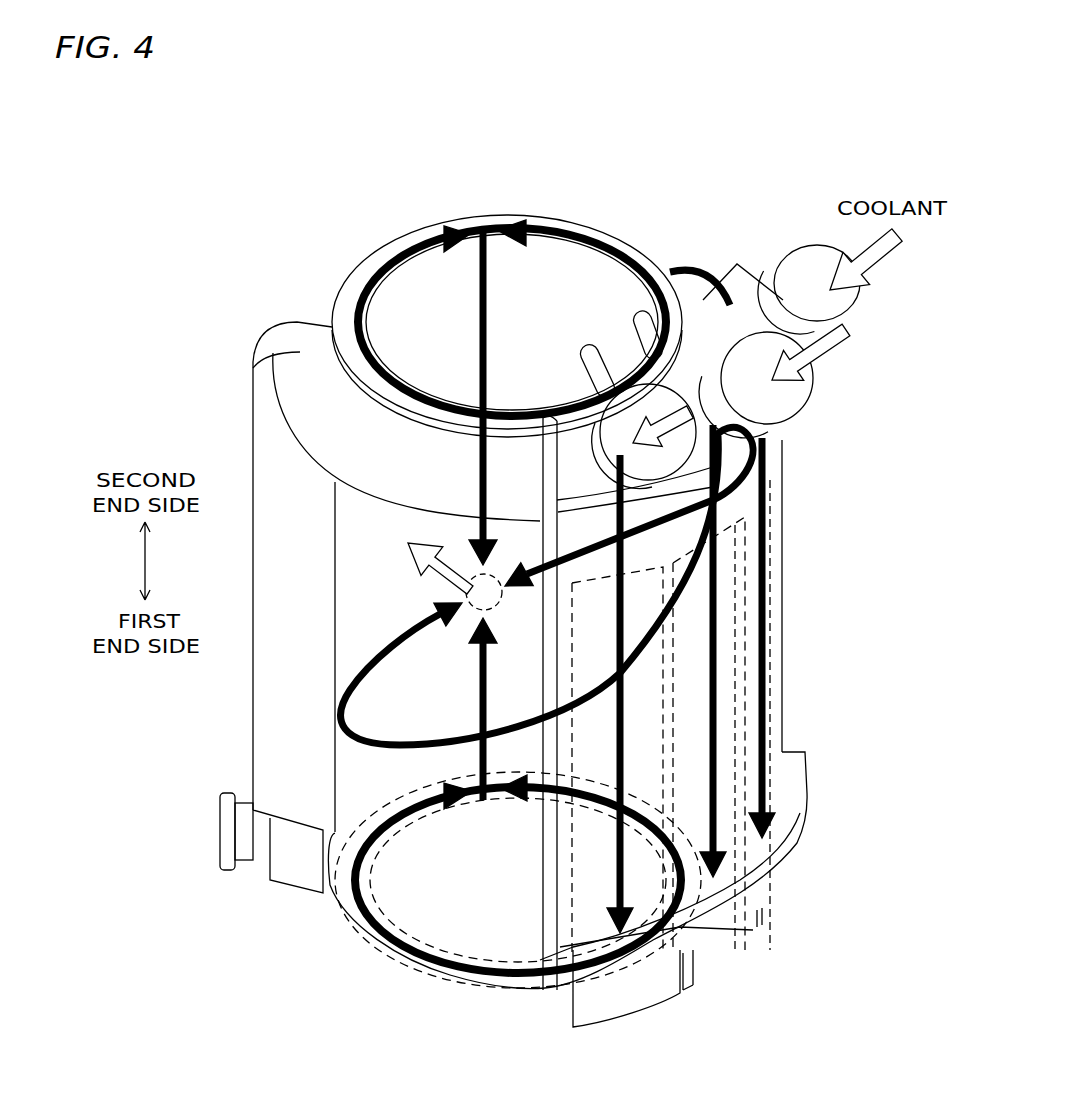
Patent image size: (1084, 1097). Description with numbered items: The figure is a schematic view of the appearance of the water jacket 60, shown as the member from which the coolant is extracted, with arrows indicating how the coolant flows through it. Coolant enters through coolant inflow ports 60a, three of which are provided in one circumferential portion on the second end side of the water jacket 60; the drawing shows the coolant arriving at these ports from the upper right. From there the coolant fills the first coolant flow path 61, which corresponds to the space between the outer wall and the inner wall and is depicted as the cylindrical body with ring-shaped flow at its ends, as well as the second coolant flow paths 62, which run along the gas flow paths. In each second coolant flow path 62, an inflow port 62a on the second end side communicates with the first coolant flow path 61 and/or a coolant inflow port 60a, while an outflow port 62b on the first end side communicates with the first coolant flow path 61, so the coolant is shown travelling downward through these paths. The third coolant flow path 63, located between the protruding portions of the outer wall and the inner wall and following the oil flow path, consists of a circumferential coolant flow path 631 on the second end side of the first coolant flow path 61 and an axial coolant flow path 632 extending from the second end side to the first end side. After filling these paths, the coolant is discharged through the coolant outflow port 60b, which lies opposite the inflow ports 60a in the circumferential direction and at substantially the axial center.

The water jacket 60 is at (789, 162).
The coolant inflow port 60a is at (823, 293).
The coolant outflow port 60b is at (460, 594).
The first coolant flow path 61 is at (393, 950).
The second coolant flow path 62 is at (767, 660).
The inflow port 62a is at (770, 482).
The outflow port 62b is at (753, 815).
The third coolant flow path 63 is at (158, 325).
The circumferential coolant flow path 631 is at (327, 418).
The axial coolant flow path 632 is at (283, 490).